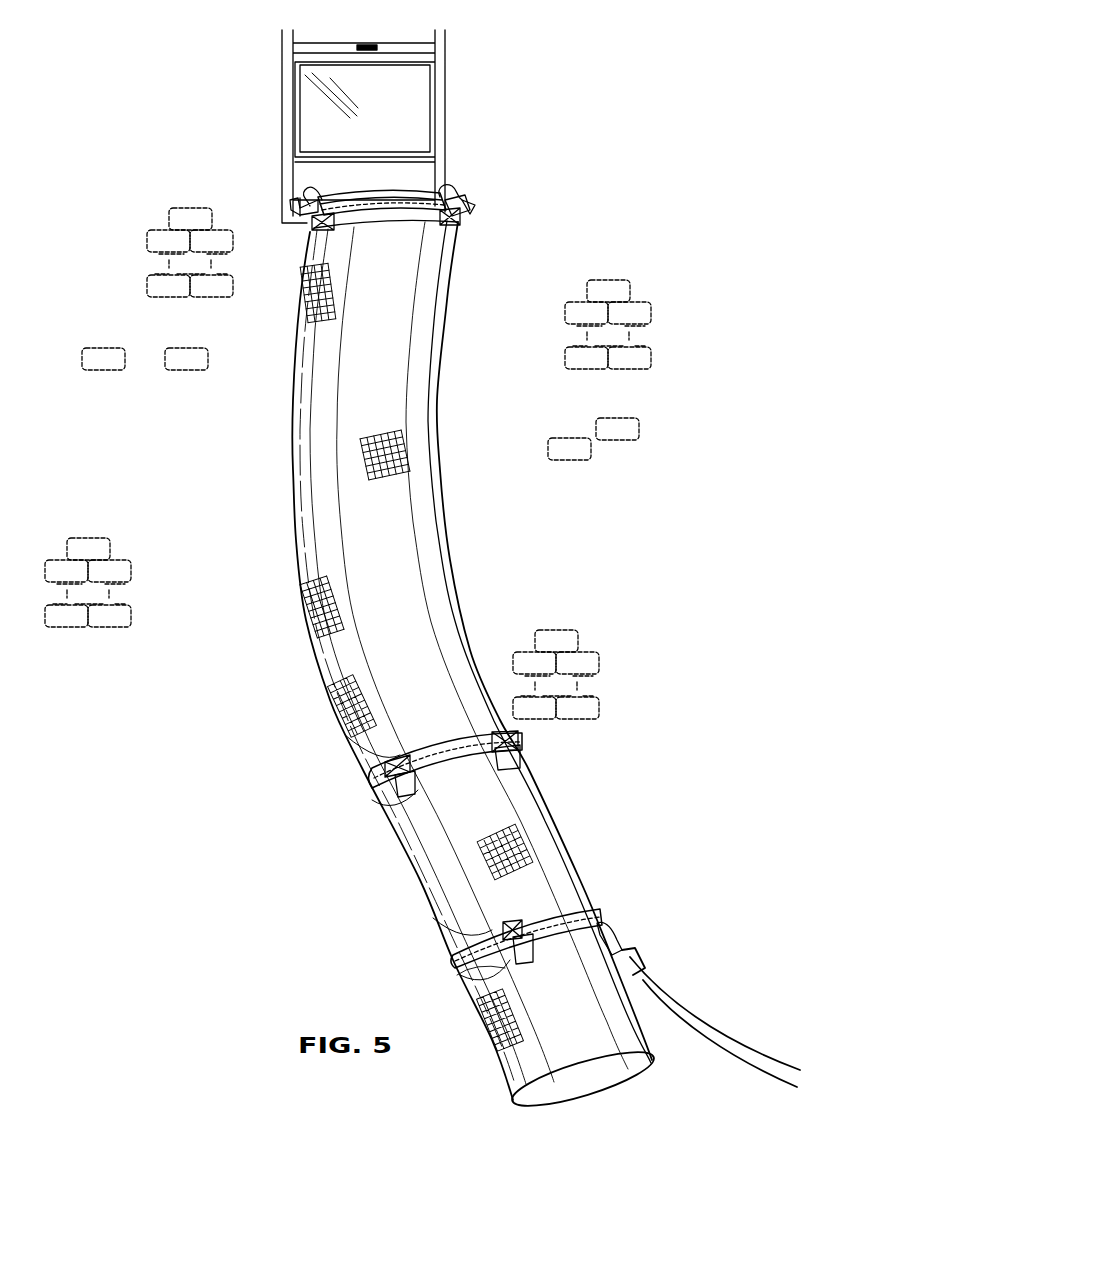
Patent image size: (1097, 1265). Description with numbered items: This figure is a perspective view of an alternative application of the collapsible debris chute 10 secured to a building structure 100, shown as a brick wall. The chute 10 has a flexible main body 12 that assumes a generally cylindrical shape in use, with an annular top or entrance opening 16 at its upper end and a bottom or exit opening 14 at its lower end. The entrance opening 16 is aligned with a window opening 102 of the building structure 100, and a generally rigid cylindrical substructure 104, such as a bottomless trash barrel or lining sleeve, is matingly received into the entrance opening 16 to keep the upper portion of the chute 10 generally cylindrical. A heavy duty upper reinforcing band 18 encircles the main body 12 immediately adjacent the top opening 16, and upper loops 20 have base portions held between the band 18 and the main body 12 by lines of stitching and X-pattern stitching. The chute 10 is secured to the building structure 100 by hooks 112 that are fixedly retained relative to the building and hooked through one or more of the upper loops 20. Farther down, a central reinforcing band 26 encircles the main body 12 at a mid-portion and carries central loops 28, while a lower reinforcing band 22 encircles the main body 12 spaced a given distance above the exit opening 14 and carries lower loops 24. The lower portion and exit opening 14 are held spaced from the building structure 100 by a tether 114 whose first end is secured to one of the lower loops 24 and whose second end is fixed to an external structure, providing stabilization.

The collapsible debris chute 10 is at (594, 242).
The main body 12 is at (292, 462).
The bottom opening 14 is at (605, 1080).
The top opening 16 is at (383, 198).
The upper reinforcing band 18 is at (425, 220).
The upper loops 20 is at (465, 208).
The lower reinforcing band 22 is at (455, 935).
The lower loops 24 is at (500, 990).
The central reinforcing band 26 is at (375, 770).
The central loops 28 is at (400, 790).
The building structure 100 is at (96, 252).
The window opening 102 is at (285, 122).
The cylindrical substructure 104 is at (445, 195).
The hooks 112 is at (290, 215).
The tether 114 is at (697, 1020).